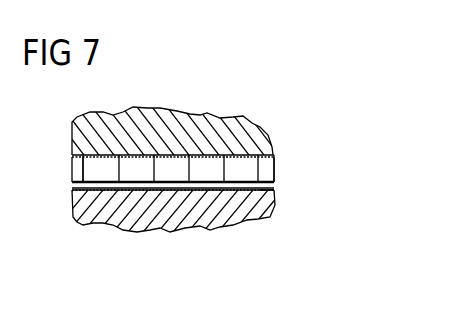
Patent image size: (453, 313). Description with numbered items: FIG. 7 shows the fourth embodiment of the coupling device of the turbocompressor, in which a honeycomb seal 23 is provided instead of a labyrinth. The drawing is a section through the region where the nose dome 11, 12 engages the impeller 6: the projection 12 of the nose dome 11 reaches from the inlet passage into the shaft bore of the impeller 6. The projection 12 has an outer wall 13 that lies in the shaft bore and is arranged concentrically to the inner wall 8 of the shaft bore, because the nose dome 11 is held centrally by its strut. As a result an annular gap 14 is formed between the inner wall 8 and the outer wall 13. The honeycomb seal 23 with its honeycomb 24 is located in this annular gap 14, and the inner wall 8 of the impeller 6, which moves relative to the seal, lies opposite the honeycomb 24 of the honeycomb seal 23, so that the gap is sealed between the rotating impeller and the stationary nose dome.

The impeller 6 is at (210, 114).
The inner wall 8 is at (74, 158).
The honeycomb 24 is at (81, 171).
The outer wall 13 is at (75, 189).
The annular gap 14 is at (276, 187).
The honeycomb seal 23 is at (276, 163).
The nose dome 11 is at (145, 234).
The projection 12 is at (203, 219).